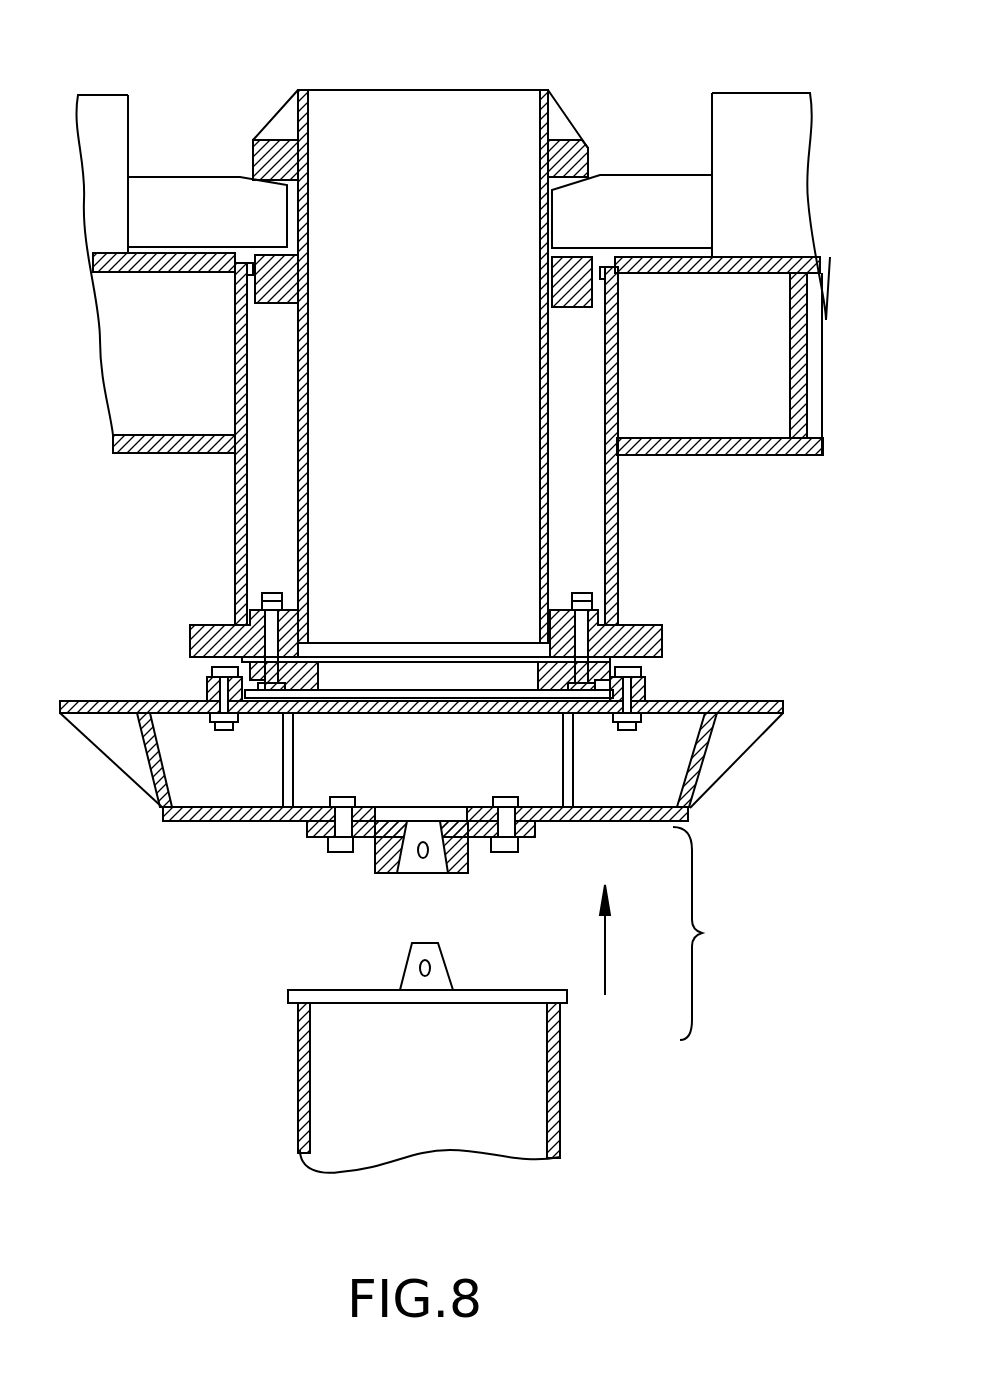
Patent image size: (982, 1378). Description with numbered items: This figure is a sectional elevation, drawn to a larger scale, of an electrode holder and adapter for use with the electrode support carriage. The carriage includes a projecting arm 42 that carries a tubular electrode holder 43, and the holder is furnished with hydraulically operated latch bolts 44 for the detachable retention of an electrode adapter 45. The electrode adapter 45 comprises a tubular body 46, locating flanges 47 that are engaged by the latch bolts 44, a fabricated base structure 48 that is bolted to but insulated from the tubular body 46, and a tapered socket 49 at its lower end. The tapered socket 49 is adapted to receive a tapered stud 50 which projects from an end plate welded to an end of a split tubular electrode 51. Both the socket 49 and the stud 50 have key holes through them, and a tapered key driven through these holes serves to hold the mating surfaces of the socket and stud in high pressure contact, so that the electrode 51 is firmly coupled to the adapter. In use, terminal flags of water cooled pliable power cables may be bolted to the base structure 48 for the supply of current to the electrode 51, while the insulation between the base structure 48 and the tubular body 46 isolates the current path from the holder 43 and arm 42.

The projecting arm 42 is at (753, 423).
The tubular electrode holder 43 is at (620, 468).
The latch bolts 44 is at (193, 183).
The electrode adapter 45 is at (612, 137).
The tubular body 46 is at (520, 528).
The locating flanges 47 is at (263, 290).
The fabricated base structure 48 is at (737, 743).
The tapered socket 49 is at (375, 867).
The tapered stud 50 is at (400, 975).
The split tubular electrode 51 is at (298, 1063).